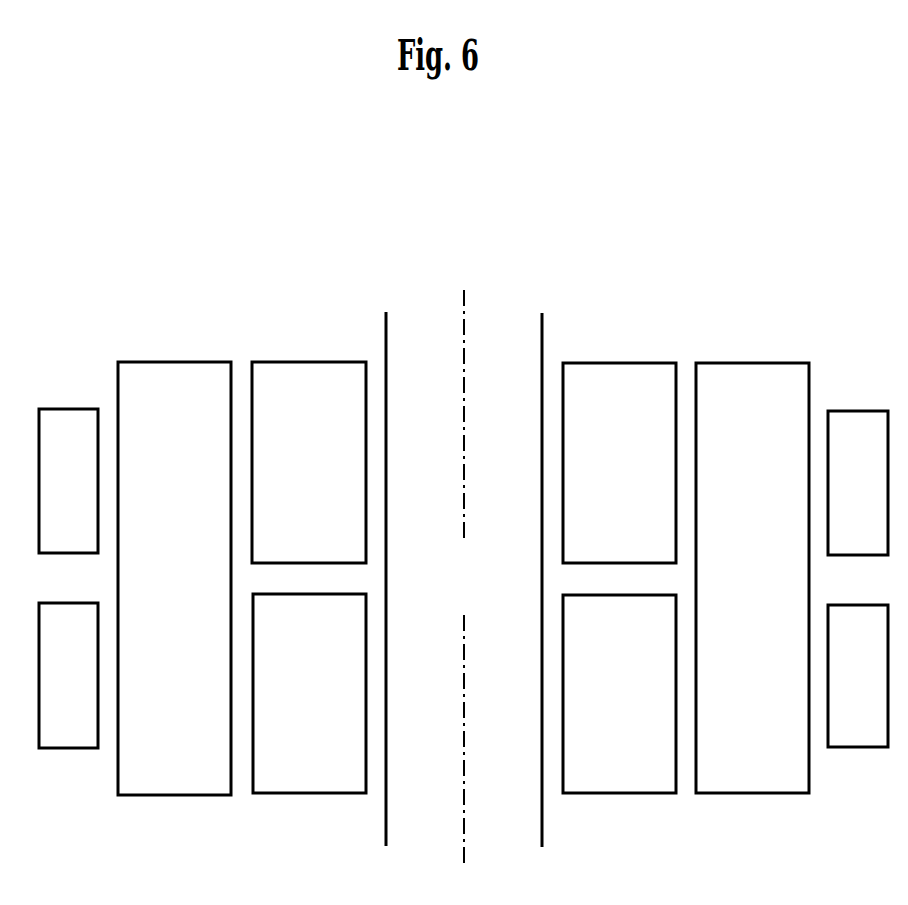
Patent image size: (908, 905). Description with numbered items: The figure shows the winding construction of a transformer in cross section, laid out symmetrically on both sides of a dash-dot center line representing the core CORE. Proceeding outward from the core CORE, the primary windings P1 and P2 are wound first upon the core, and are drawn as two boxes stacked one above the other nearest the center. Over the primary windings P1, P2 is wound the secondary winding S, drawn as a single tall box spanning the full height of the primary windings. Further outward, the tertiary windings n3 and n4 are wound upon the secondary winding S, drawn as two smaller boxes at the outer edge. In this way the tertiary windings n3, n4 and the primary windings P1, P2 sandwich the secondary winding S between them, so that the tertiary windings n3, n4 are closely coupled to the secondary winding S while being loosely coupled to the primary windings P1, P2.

The core CORE is at (464, 578).
The secondary winding S is at (463, 578).
The primary winding P1 is at (464, 462).
The primary winding P2 is at (464, 693).
The tertiary winding n3 is at (463, 482).
The tertiary winding n4 is at (463, 675).